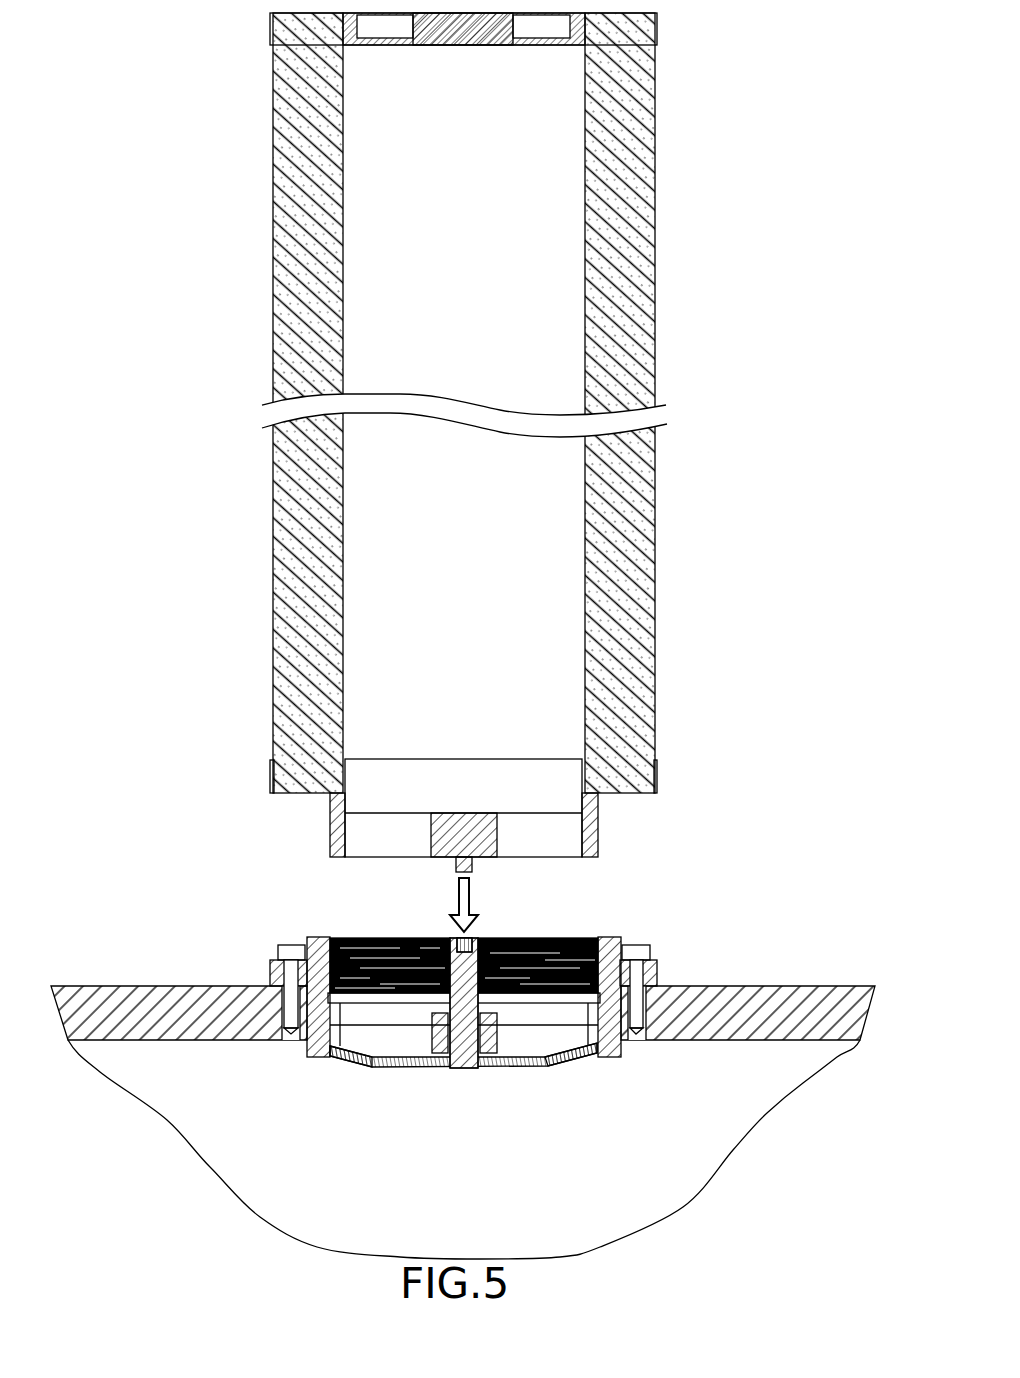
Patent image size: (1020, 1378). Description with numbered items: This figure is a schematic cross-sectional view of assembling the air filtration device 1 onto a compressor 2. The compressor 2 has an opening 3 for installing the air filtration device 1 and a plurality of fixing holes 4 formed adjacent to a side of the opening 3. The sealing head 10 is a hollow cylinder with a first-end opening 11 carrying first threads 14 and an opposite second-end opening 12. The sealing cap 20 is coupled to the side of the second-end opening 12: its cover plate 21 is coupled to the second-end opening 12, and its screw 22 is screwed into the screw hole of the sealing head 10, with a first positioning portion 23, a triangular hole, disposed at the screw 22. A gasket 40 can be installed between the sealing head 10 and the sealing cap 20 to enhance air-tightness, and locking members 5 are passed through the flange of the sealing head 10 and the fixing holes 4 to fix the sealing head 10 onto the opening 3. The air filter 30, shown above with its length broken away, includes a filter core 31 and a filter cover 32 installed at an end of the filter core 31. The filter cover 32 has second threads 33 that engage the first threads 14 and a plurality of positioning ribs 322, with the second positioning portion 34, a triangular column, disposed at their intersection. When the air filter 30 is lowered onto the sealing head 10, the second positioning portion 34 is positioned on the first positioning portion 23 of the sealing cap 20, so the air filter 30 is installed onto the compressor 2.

The air filtration device 1 is at (228, 516).
The compressor 2 is at (803, 1000).
The opening 3 is at (312, 1057).
The fixing hole 4 is at (643, 1000).
The locking member 5 is at (637, 948).
The sealing head 10 is at (608, 1033).
The first-end opening 11 is at (318, 938).
The second-end opening 12 is at (318, 1060).
The first threads 14 is at (576, 938).
The sealing cap 20 is at (432, 1067).
The cover plate 21 is at (578, 1062).
The screw 22 is at (480, 1005).
The first positioning portion 23 is at (468, 938).
The air filter 30 is at (662, 203).
The filter core 31 is at (637, 277).
The filter cover 32 is at (598, 825).
The second threads 33 is at (330, 828).
The second positioning portion 34 is at (455, 863).
The gasket 40 is at (278, 982).
The positioning ribs 322 is at (372, 843).